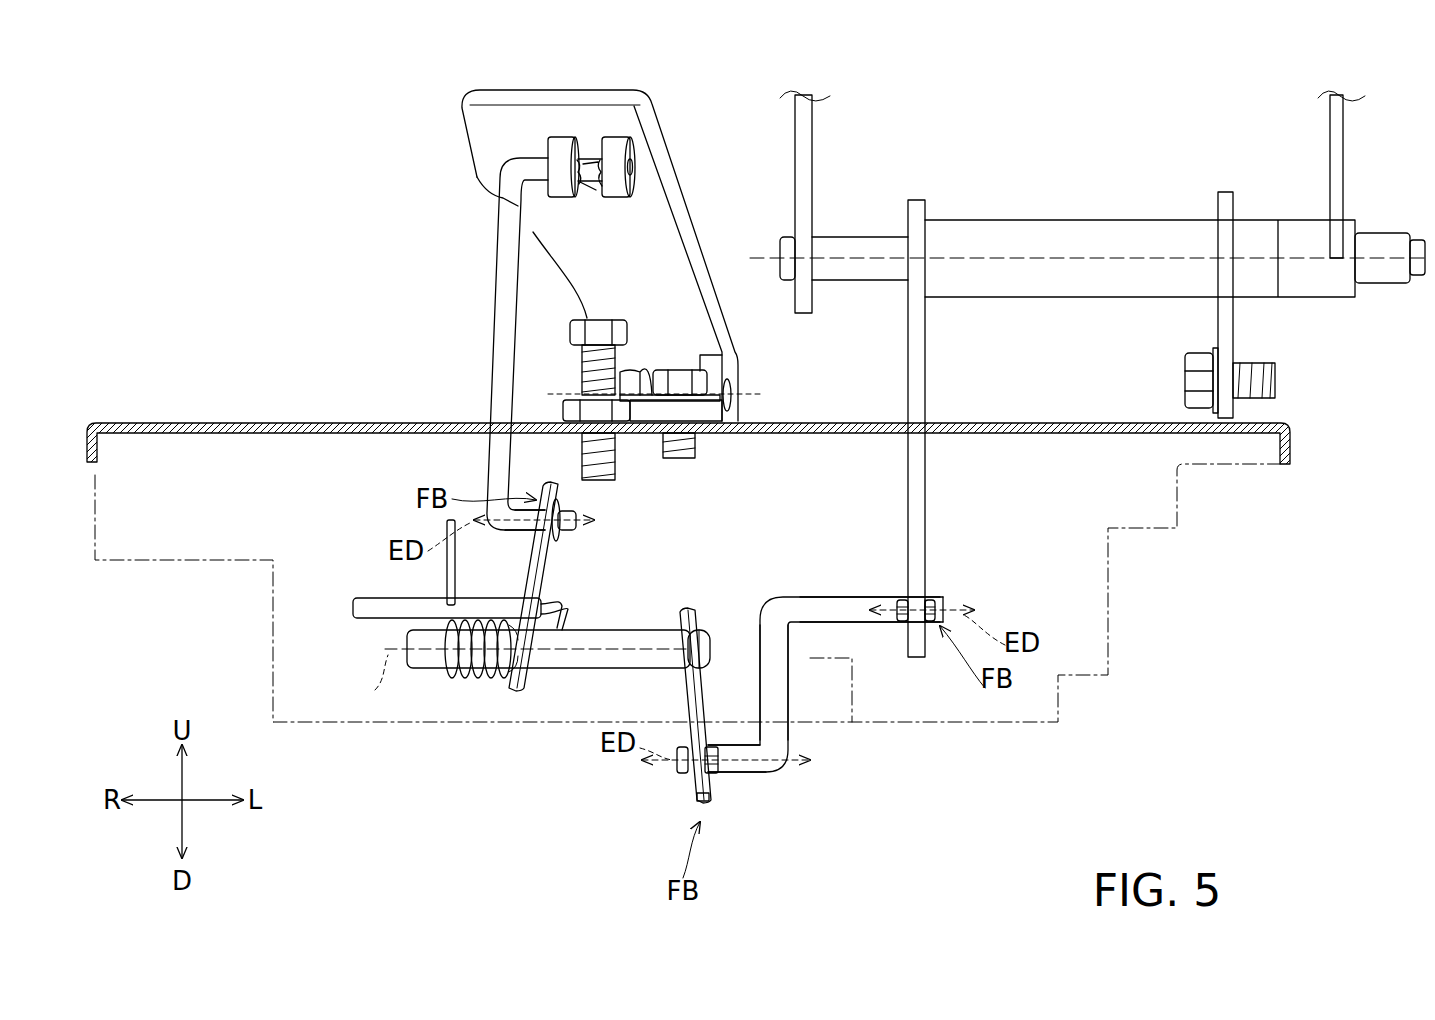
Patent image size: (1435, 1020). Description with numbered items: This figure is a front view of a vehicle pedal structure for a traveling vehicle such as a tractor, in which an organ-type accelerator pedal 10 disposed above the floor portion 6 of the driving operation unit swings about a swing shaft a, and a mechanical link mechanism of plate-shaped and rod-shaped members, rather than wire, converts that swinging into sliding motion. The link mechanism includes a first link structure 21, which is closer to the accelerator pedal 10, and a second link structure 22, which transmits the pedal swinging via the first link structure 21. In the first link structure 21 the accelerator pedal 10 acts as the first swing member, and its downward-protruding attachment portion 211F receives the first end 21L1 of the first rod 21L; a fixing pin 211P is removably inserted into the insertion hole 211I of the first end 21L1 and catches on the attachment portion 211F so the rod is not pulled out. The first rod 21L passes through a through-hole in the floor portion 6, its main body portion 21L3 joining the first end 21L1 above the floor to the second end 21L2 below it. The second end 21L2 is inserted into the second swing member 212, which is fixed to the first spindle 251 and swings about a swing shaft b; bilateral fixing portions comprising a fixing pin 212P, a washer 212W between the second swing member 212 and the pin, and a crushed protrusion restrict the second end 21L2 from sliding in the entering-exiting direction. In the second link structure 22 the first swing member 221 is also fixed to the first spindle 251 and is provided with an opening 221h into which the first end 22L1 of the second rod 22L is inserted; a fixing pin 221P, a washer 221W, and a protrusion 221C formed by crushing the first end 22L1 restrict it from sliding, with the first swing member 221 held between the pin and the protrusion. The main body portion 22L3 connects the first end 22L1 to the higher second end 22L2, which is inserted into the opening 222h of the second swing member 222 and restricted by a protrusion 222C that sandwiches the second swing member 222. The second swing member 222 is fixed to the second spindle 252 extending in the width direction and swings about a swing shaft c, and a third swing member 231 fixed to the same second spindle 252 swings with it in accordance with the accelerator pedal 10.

The floor portion 6 is at (337, 422).
The accelerator pedal 10 is at (688, 193).
The first link structure 21 is at (488, 262).
The first rod 21L is at (493, 358).
The first end 21L1 is at (592, 168).
The second end 21L2 is at (515, 533).
The main body portion 21L3 is at (497, 300).
The attachment portion 211F is at (558, 137).
The insertion hole 211I is at (633, 168).
The fixing pin 211P is at (596, 196).
The second swing member 212 is at (545, 574).
The fixing pin 212P is at (570, 512).
The washer 212W is at (562, 530).
The second link structure 22 is at (802, 780).
The second rod 22L is at (789, 702).
The first end 22L1 is at (746, 778).
The second end 22L2 is at (762, 655).
The main body portion 22L3 is at (833, 594).
The first swing member 221 is at (686, 692).
The protrusion 221C is at (722, 748).
The washer 221W is at (690, 770).
The fixing pin 221P is at (700, 792).
The opening 221h is at (712, 792).
The second swing member 222 is at (926, 352).
The protrusion 222C is at (937, 623).
The opening 222h is at (928, 598).
The third swing member 231 is at (813, 149).
The first spindle 251 is at (565, 668).
The second spindle 252 is at (1115, 233).